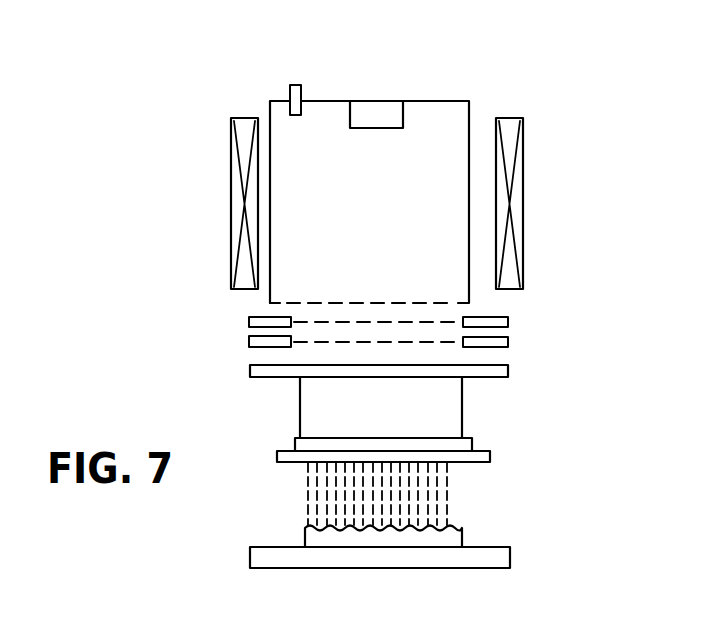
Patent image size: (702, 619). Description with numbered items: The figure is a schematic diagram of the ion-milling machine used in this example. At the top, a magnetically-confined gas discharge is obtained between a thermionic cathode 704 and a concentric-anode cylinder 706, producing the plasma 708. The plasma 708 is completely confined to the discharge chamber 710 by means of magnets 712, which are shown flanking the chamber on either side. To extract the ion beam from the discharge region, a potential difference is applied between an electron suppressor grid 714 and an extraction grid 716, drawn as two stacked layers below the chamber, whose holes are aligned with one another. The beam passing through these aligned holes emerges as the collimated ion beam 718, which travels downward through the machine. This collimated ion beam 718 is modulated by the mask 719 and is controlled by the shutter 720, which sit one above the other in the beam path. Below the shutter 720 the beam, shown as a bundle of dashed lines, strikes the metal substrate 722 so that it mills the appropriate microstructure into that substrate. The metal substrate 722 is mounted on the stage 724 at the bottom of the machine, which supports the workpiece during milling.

The thermionic cathode 704 is at (390, 112).
The concentric-anode cylinder 706 is at (308, 58).
The plasma 708 is at (388, 229).
The discharge chamber 710 is at (470, 295).
The magnets 712 is at (231, 193).
The electron suppressor grid 714 is at (249, 322).
The extraction grid 716 is at (249, 347).
The collimated ion beam 718 is at (462, 410).
The mask 719 is at (295, 450).
The shutter 720 is at (490, 452).
The metal substrate 722 is at (463, 538).
The stage 724 is at (270, 563).